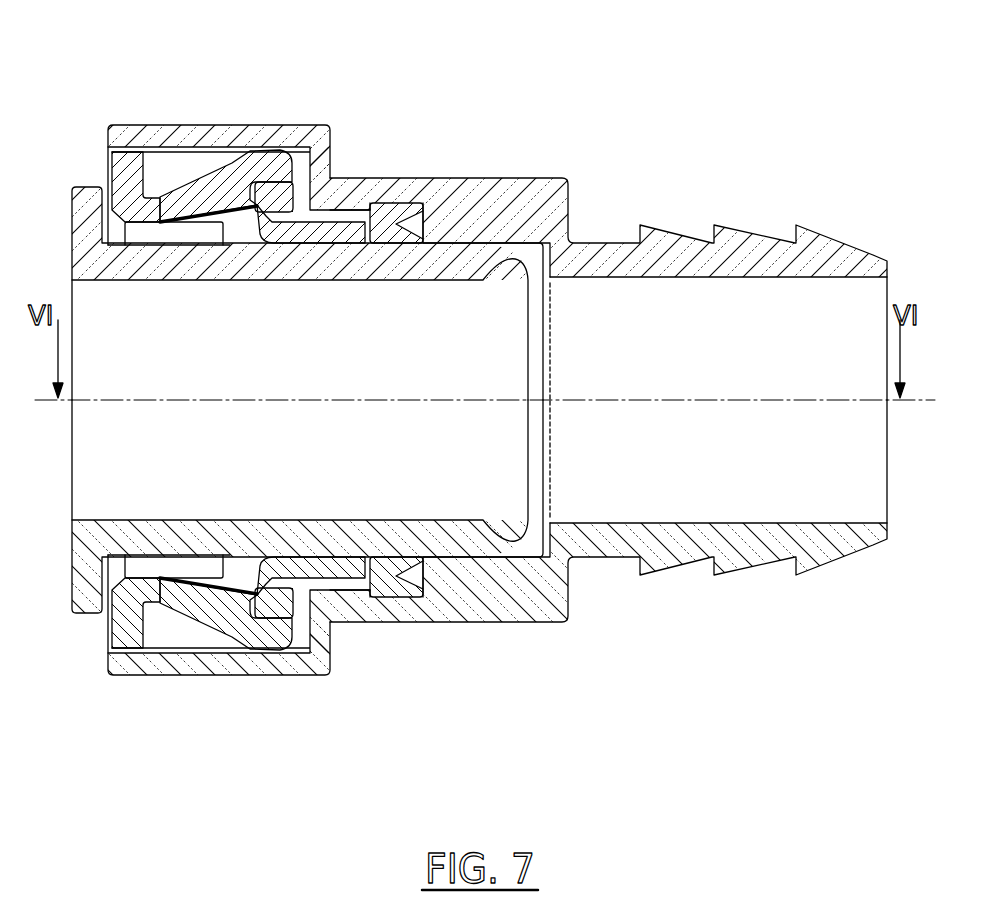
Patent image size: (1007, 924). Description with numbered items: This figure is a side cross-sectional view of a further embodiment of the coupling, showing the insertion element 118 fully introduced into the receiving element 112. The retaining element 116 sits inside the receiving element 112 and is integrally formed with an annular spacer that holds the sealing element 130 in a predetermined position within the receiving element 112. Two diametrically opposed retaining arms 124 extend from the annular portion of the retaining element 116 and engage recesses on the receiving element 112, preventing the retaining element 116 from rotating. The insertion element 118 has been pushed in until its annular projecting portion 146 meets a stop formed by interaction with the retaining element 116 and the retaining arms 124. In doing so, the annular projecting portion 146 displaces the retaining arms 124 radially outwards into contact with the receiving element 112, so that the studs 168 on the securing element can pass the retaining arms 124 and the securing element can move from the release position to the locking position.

The receiving element 112 is at (731, 255).
The retaining element 116 is at (160, 200).
The insertion element 118 is at (87, 587).
The retaining arm 124 is at (215, 197).
The sealing element 130 is at (393, 217).
The annular projecting portion 146 is at (229, 570).
The stud 168 is at (279, 197).